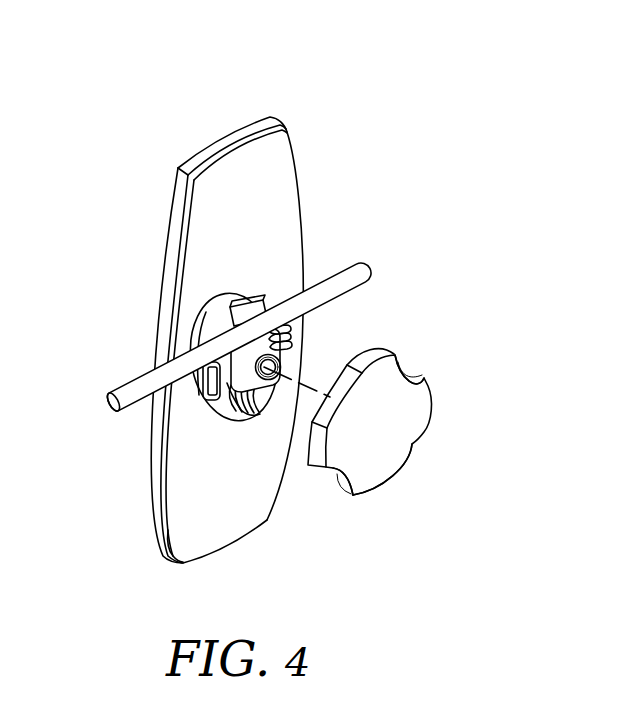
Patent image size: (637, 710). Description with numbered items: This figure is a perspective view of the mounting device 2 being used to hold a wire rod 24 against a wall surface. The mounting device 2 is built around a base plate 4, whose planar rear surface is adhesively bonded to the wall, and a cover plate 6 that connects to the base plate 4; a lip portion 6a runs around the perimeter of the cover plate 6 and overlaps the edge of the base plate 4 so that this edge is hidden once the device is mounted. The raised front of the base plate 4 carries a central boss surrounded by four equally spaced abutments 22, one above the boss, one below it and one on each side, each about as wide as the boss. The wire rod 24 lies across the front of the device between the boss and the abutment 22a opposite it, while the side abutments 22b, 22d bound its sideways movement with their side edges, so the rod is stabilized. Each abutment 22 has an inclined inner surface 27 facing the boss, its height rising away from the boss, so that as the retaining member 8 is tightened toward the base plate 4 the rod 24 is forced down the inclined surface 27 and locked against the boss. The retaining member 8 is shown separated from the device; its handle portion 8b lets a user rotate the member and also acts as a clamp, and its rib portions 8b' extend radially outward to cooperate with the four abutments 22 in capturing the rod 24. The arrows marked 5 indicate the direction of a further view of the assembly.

The mounting device 2 is at (108, 170).
The base plate 4 is at (215, 330).
The section line of FIG. 5 is at (238, 112).
The cover plate 6 is at (273, 170).
The lip portion 6a is at (163, 518).
The retaining member 8 is at (400, 412).
The handle portion 8b is at (407, 469).
The rib portions 8b' is at (397, 444).
The abutments 22 is at (253, 410).
The abutment opposite the boss 22a is at (245, 305).
The slot 22b is at (212, 382).
The ribs 22d is at (287, 338).
The wire rod 24 is at (358, 276).
The inclined inner surface 27 is at (222, 420).